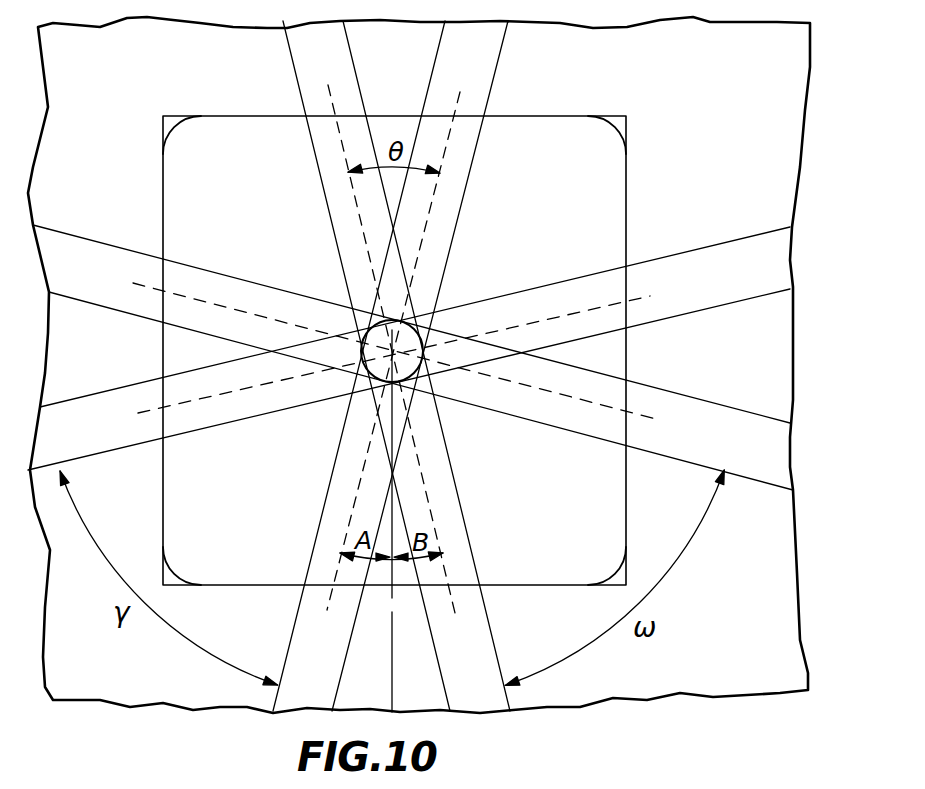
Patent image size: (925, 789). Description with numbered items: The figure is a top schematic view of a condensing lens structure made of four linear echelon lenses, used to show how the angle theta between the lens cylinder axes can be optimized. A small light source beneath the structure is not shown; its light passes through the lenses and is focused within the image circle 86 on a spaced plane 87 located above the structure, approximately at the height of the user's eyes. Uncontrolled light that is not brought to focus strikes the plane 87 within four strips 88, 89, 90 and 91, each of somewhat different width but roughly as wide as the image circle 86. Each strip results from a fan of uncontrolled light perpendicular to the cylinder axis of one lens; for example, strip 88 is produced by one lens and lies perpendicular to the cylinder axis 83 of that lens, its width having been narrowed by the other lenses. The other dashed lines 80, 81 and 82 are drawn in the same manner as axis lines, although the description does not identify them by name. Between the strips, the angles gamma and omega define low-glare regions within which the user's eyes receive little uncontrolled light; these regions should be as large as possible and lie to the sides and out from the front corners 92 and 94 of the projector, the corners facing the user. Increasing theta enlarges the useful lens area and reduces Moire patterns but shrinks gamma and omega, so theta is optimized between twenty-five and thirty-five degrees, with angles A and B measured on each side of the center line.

The first inclined dashed axis line 80 is at (325, 83).
The dashed centerline of first transverse band 81 is at (644, 290).
The second inclined dashed axis line 82 is at (460, 89).
The cylinder axis 83 is at (586, 402).
The image circle 86 is at (415, 373).
The spaced plane 87 is at (793, 360).
The strip 88 is at (499, 58).
The strip 89 is at (683, 250).
The strip 90 is at (693, 400).
The strip 91 is at (490, 625).
The front corner 92 is at (180, 578).
The front corner 94 is at (618, 588).